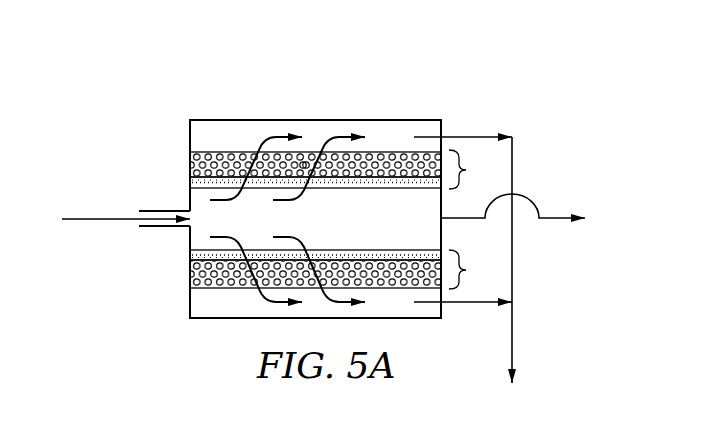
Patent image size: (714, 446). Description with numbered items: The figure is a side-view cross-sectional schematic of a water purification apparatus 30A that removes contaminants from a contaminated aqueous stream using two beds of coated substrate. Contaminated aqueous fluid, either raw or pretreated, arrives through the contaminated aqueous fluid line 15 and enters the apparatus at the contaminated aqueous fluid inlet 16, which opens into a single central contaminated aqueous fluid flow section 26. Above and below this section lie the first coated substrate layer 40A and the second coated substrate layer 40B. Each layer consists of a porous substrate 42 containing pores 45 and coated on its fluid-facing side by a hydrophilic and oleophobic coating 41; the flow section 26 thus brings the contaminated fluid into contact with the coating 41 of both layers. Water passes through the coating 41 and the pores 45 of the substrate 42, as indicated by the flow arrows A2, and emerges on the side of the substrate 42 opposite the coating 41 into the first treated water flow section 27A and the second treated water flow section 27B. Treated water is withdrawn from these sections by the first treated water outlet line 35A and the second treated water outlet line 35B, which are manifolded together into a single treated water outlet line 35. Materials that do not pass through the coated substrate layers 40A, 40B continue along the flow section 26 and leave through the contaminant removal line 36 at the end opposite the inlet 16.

The water purification apparatus 30A is at (214, 62).
The contaminated aqueous fluid line 15 is at (118, 218).
The contaminated aqueous fluid inlet 16 is at (186, 227).
The porous substrate 42 is at (190, 160).
The hydrophilic and oleophobic coating 41 is at (190, 182).
The flow direction A2 is at (267, 144).
The pores 45 is at (303, 164).
The contaminated aqueous fluid flow section 26 is at (380, 230).
The first treated water flow section 27A is at (409, 147).
The second treated water flow section 27B is at (409, 312).
The first treated water outlet line 35A is at (466, 133).
The second treated water outlet line 35B is at (470, 305).
The treated water outlet line 35 is at (512, 272).
The contaminant removal line 36 is at (558, 222).
The first coated substrate layer 40A is at (477, 169).
The second coated substrate layer 40B is at (477, 269).